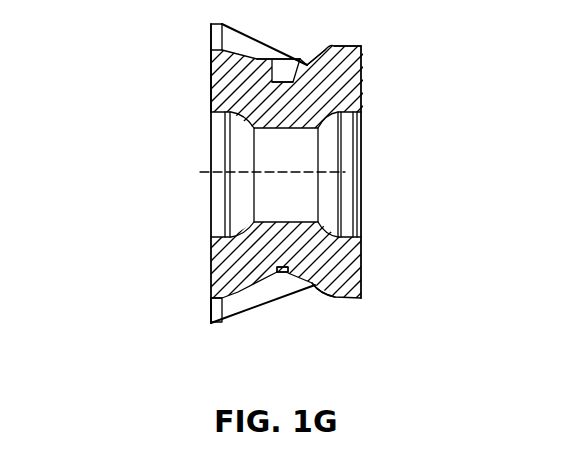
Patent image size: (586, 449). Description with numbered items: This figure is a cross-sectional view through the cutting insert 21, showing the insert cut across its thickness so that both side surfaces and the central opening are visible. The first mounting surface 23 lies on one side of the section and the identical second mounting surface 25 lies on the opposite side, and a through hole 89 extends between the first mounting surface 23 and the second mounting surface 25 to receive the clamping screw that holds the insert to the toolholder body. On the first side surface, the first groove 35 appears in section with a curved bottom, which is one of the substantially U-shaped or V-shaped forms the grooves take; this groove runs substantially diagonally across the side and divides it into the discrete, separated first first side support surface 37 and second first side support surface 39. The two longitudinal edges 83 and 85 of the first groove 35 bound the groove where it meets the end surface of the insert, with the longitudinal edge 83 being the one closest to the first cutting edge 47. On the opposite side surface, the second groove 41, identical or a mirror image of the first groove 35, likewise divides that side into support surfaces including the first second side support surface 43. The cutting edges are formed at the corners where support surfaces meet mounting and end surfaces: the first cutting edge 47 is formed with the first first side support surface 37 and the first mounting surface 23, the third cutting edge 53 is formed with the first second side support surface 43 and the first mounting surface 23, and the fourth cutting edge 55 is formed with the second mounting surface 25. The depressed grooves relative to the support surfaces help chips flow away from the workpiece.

The insert 21 is at (460, 307).
The first mounting surface 23 is at (203, 242).
The second mounting surface 25 is at (370, 104).
The first groove 35 is at (282, 92).
The first first side support surface 37 is at (212, 69).
The second first side support surface 39 is at (363, 46).
The second groove 41 is at (291, 284).
The first second side support surface 43 is at (222, 299).
The first cutting edge 47 is at (203, 27).
The third cutting edge 53 is at (200, 319).
The fourth cutting edge 55 is at (314, 288).
The longitudinal edge 83 is at (280, 57).
The longitudinal edge 85 is at (305, 62).
The through hole 89 is at (297, 167).